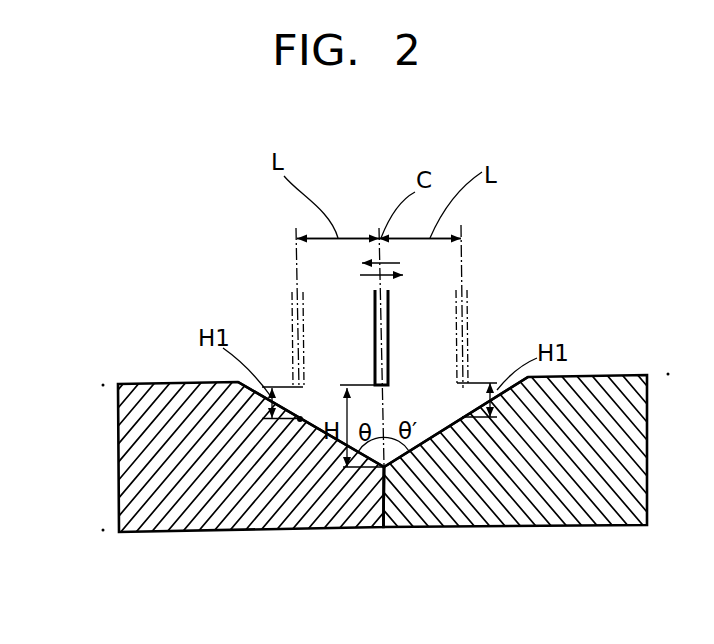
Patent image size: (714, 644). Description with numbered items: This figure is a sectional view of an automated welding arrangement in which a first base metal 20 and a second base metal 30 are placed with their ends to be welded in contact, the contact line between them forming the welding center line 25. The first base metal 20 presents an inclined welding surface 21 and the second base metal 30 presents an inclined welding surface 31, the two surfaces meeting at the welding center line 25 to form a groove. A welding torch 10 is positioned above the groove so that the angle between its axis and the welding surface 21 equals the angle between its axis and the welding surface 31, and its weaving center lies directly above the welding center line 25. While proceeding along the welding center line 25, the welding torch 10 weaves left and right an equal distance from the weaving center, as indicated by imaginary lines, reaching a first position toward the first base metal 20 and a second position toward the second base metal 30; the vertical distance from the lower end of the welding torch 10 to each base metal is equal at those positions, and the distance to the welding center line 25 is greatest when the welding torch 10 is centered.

The welding torch 10 is at (390, 318).
The first base metal 20 is at (168, 414).
The welding surface 21 is at (318, 412).
The welding center line 25 is at (386, 478).
The second base metal 30 is at (620, 378).
The welding surface 31 is at (442, 413).